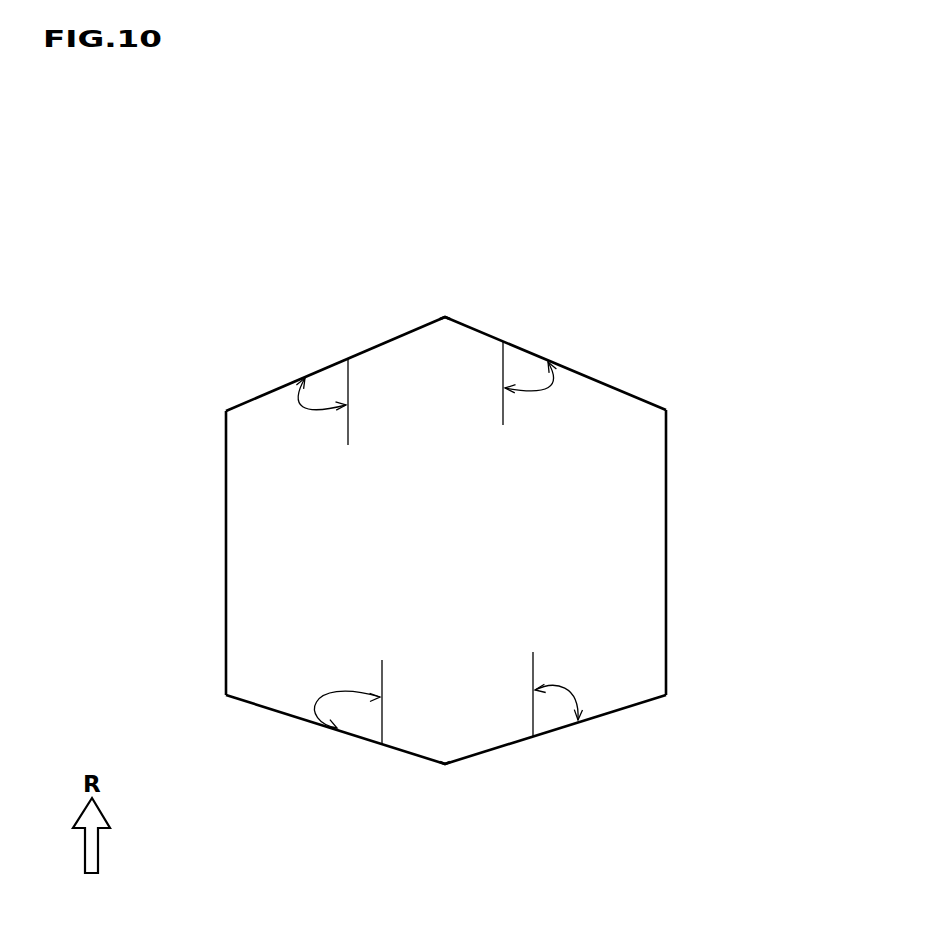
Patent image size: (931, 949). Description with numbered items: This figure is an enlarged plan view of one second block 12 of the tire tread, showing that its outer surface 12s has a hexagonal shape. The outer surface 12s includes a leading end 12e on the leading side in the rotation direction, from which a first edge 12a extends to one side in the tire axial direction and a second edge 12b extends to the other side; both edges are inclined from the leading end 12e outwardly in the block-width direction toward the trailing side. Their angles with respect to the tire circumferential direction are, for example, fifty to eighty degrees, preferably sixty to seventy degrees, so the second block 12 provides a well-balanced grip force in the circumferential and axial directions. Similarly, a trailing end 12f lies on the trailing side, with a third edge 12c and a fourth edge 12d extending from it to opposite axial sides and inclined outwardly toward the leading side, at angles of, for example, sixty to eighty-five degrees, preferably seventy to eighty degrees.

The second block 12 is at (490, 545).
The first edge 12a is at (628, 392).
The second edge 12b is at (395, 338).
The third edge 12c is at (495, 750).
The fourth edge 12d is at (262, 708).
The leading end 12e is at (445, 317).
The trailing end 12f is at (445, 764).
The outer surface 12s is at (593, 523).